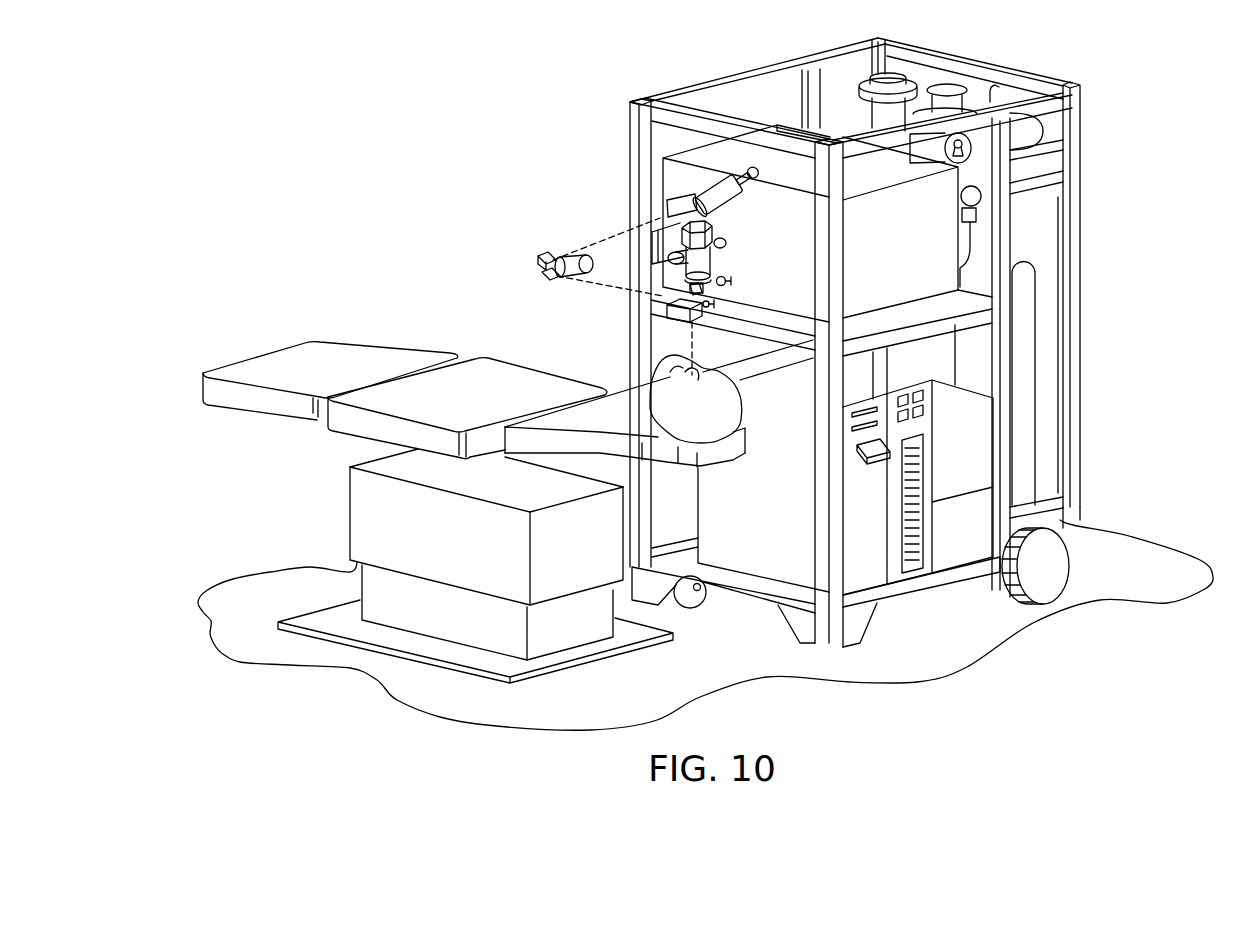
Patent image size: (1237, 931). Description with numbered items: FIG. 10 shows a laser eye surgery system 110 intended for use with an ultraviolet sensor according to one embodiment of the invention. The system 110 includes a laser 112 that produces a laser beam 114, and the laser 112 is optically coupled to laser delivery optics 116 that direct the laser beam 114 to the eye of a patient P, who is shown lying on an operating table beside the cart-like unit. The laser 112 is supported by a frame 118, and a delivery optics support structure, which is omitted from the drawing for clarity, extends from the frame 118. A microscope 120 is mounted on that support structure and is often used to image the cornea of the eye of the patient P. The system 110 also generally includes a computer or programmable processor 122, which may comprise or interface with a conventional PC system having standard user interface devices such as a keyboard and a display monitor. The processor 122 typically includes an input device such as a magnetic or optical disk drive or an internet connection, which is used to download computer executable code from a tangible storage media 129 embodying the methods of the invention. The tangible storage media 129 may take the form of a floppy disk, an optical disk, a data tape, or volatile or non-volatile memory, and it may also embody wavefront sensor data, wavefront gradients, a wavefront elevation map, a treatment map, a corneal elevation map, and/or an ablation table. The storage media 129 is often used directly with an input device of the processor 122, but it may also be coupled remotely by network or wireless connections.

The laser system 110 is at (463, 110).
The laser 112 is at (1108, 195).
The laser beam 114 is at (600, 233).
The laser delivery optics 116 is at (553, 279).
The frame 118 is at (714, 93).
The microscope 120 is at (703, 221).
The processor 122 is at (911, 606).
The tangible storage media 129 is at (863, 461).
The patient P is at (743, 410).